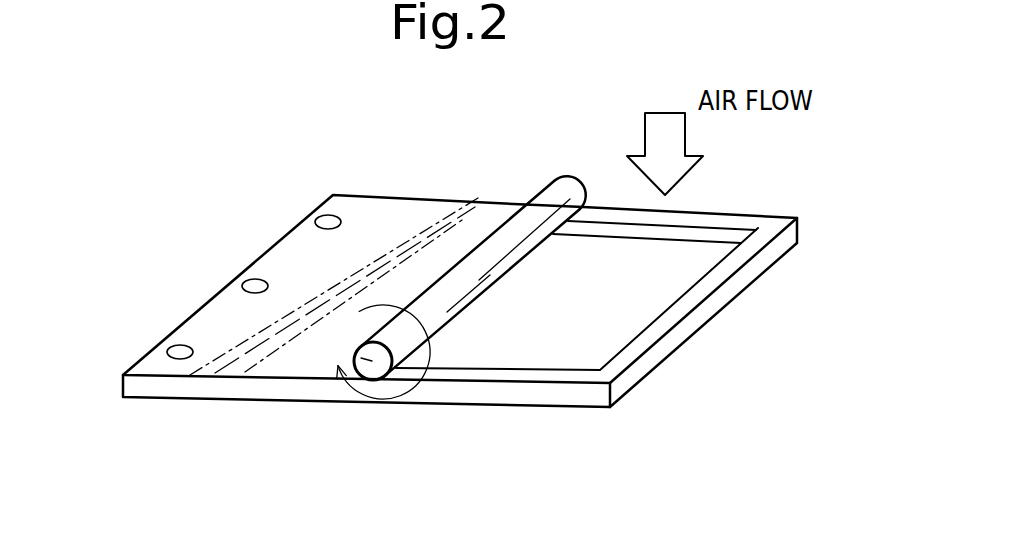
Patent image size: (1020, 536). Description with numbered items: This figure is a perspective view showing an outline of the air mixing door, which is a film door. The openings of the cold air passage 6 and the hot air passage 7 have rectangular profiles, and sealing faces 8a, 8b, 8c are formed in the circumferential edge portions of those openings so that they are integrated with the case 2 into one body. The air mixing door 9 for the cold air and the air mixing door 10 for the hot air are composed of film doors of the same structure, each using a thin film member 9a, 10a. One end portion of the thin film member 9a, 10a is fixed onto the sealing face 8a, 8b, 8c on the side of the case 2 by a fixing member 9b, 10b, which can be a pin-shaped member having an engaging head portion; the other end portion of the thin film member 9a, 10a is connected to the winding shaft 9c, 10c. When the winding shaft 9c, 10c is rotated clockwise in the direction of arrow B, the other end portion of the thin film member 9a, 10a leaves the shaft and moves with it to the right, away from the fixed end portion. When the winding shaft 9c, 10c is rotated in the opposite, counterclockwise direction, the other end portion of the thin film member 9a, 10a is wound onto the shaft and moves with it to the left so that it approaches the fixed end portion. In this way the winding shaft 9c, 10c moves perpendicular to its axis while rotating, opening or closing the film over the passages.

The case 2 is at (186, 402).
The cold air passage 6 is at (603, 299).
The hot air passage 7 is at (647, 300).
The sealing face 8a is at (709, 202).
The sealing face 8b is at (709, 202).
The sealing face 8c is at (722, 224).
The air mixing door 9 is at (473, 238).
The air mixing door 10 is at (486, 193).
The thin film member 9a is at (334, 238).
The thin film member 10a is at (387, 207).
The fixing member 9b is at (184, 271).
The fixing member 10b is at (316, 221).
The winding shaft 9c is at (324, 401).
The winding shaft 10c is at (352, 358).
The direction of arrow B is at (410, 398).